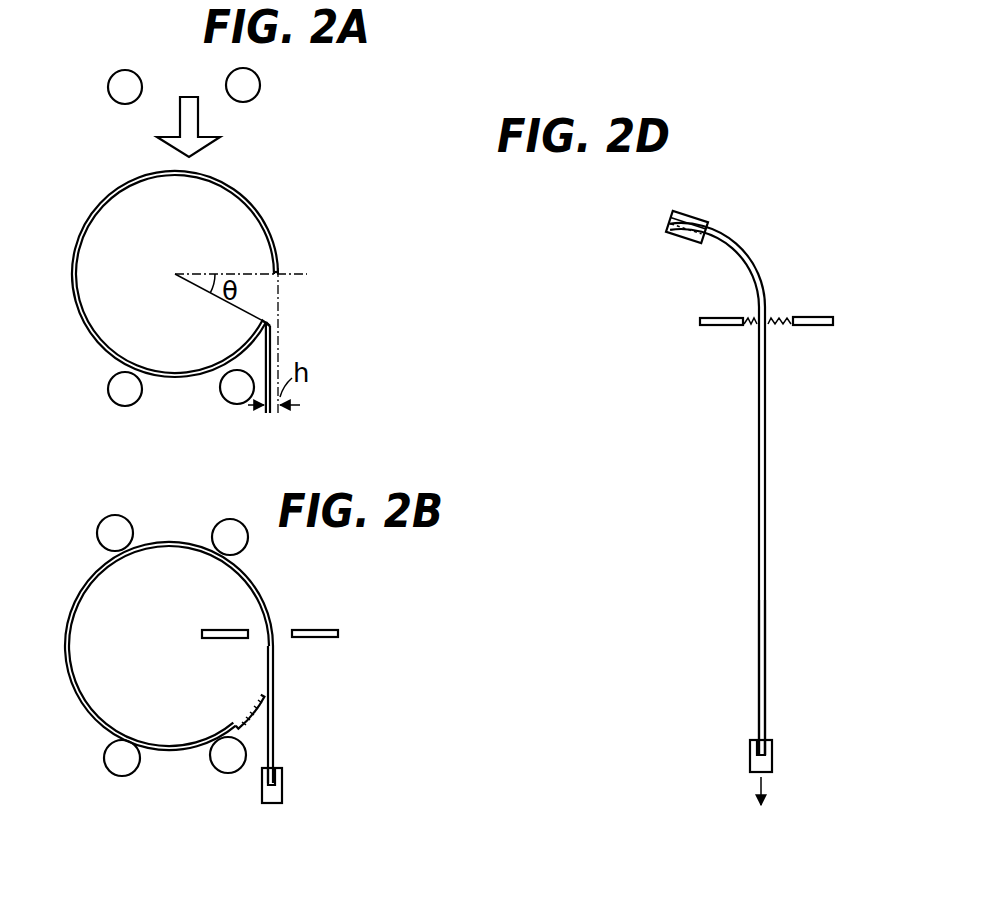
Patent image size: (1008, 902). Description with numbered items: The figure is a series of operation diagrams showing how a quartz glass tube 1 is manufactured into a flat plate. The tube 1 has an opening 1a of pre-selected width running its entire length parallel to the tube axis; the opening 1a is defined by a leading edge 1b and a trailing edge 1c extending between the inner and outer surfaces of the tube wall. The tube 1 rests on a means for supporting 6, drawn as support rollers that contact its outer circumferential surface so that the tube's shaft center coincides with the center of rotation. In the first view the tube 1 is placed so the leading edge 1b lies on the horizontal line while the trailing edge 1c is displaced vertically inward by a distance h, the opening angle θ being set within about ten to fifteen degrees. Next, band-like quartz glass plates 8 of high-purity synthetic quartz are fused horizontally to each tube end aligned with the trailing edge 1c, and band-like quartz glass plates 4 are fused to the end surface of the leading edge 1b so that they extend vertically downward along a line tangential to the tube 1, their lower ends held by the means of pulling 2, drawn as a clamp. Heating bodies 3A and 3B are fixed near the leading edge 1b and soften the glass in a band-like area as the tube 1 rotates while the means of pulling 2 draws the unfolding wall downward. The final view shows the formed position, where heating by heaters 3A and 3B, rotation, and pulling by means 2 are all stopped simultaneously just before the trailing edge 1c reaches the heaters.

In FIG. 2A, the quartz glass tube 1 is at (268, 221).
In FIG. 2B, the quartz glass tube 1 is at (262, 595).
In FIG. 2D, the quartz glass tube 1 is at (747, 257).
In FIG. 2A, the opening 1a is at (272, 296).
In FIG. 2A, the leading edge 1b is at (280, 277).
In FIG. 2A, the trailing edge 1c is at (268, 323).
In FIG. 2B, the means of pulling 2 is at (299, 773).
In FIG. 2D, the means of pulling 2 is at (772, 762).
In FIG. 2B, the heating body 3A is at (318, 628).
In FIG. 2D, the heating body 3A is at (805, 313).
In FIG. 2B, the heating body 3B is at (217, 630).
In FIG. 2D, the heating body 3B is at (703, 318).
In FIG. 2B, the band-like quartz glass plate 4 is at (271, 680).
In FIG. 2D, the band-like quartz glass plate 4 is at (765, 680).
In FIG. 2A, the means for supporting 6 is at (107, 404).
In FIG. 2B, the means for supporting 6 is at (107, 795).
In FIG. 2D, the means for supporting 6 is at (683, 210).
In FIG. 2B, the band-like quartz glass plate 8 is at (240, 712).
In FIG. 2D, the band-like quartz glass plate 8 is at (672, 223).